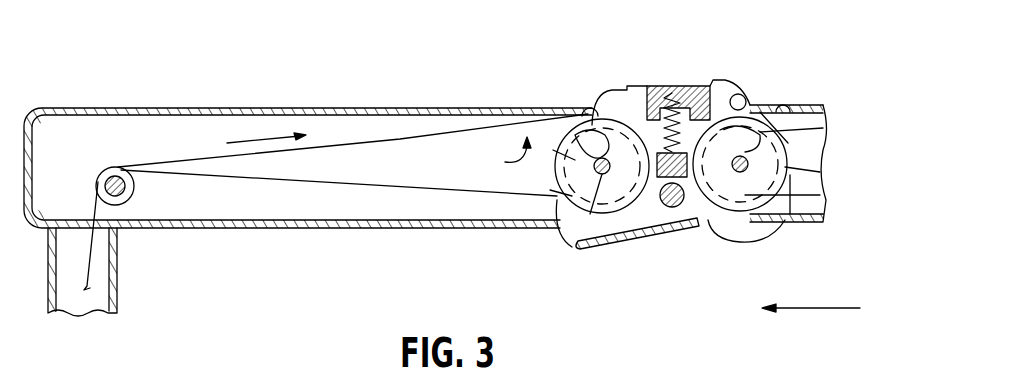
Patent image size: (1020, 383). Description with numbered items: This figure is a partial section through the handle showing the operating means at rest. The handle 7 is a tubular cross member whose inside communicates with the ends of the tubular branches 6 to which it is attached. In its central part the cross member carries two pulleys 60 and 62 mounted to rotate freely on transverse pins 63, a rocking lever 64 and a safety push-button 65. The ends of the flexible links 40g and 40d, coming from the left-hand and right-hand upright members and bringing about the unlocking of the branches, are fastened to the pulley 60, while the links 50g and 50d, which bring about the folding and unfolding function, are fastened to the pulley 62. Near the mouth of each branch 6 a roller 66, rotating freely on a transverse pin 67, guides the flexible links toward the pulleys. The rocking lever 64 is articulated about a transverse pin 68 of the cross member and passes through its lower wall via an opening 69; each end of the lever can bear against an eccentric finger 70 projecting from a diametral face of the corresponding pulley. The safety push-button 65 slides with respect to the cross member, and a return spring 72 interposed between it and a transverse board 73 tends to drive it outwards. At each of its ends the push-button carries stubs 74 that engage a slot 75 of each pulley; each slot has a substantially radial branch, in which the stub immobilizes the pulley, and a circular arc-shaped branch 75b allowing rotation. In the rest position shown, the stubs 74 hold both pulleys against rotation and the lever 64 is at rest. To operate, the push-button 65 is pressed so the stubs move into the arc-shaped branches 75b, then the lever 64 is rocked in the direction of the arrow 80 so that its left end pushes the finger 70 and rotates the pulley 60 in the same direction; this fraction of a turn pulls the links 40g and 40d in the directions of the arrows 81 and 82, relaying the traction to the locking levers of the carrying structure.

The tubular branch 6 is at (117, 292).
The transverse bar 7 is at (244, 108).
The roller 66 is at (108, 170).
The transverse pin 67 is at (127, 188).
The flexible link 40g is at (390, 143).
The flexible link 50g is at (376, 183).
The arrow 81 is at (271, 137).
The arrow 80 is at (504, 150).
The eccentric finger 70 is at (553, 150).
The stub 74 is at (590, 114).
The pulley 60 is at (612, 95).
The return spring 72 is at (683, 86).
The slot 75 is at (714, 120).
The safety push-button 65 is at (725, 98).
The transverse board 73 is at (648, 232).
The transverse pin 68 is at (675, 232).
The transverse pin 63 is at (575, 245).
The pulley 62 is at (722, 218).
The rocking lever 64 is at (598, 250).
The opening 69 is at (575, 228).
The flexible link 50d is at (778, 122).
The flexible link 40d is at (808, 218).
The circular arc-shaped slot branch 75b is at (795, 148).
The arrow 82 is at (818, 312).